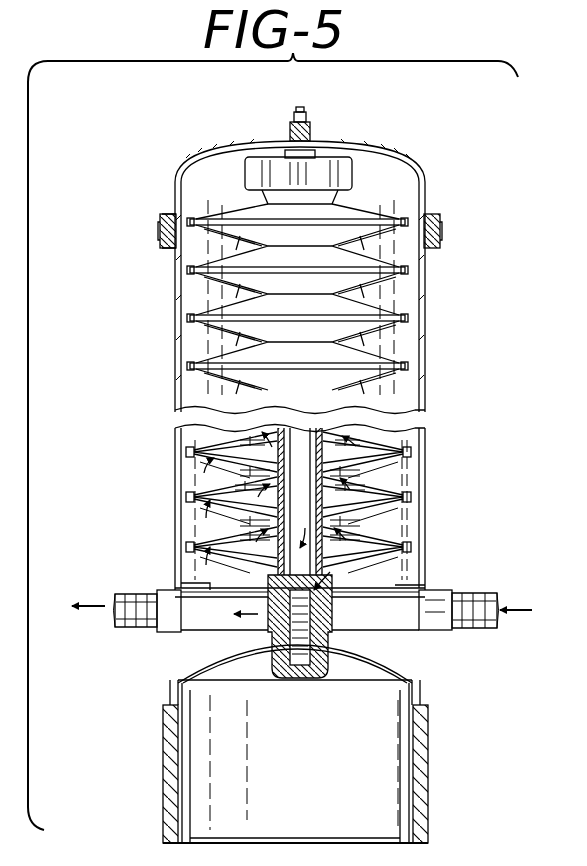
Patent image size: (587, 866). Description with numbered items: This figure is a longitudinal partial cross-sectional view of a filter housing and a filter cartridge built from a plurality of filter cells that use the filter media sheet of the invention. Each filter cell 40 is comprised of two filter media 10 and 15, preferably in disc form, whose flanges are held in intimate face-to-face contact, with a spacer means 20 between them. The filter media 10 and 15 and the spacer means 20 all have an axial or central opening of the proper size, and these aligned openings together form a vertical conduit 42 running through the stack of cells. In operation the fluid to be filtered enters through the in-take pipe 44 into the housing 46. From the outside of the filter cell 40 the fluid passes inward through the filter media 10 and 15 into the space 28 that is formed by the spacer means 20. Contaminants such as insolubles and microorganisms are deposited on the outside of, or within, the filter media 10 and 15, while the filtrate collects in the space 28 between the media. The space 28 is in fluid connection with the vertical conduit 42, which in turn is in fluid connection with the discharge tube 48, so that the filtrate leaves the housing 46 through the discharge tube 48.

The filter media 10 is at (362, 438).
The filter media 15 is at (186, 455).
The spacer means 20 is at (358, 568).
The space 28 is at (250, 478).
The filter cell 40 is at (208, 298).
The vertical conduit 42 is at (340, 578).
The in-take pipe 44 is at (434, 620).
The housing 46 is at (425, 451).
The discharge tube 48 is at (170, 618).